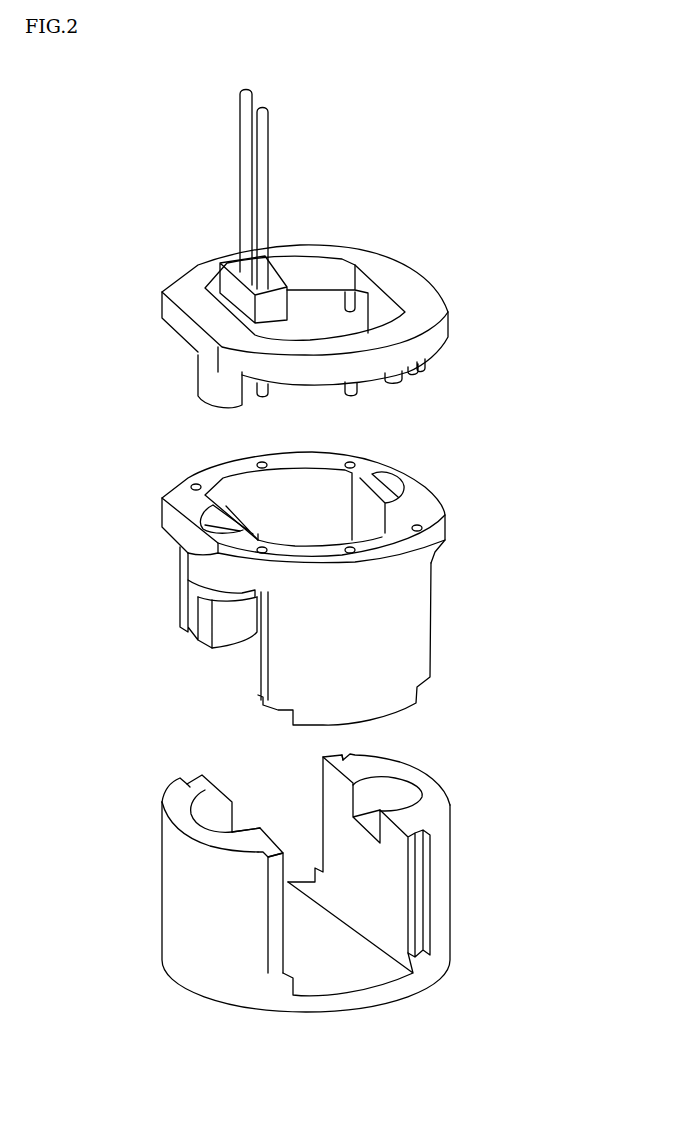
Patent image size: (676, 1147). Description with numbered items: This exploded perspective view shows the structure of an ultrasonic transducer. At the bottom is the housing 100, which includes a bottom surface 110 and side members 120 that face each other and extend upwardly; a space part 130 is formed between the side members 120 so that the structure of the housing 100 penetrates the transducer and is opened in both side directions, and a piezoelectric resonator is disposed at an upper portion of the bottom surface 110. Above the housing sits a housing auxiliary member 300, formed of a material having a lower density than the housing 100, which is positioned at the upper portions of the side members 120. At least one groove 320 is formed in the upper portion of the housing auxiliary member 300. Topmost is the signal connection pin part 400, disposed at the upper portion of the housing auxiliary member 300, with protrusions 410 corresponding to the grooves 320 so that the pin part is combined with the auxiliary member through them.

The housing 100 is at (465, 958).
The bottom surface 110 is at (353, 973).
The side members 120 is at (182, 900).
The space part 130 is at (258, 791).
The housing auxiliary member 300 is at (407, 607).
The groove 320 is at (203, 513).
The signal connection pin part 400 is at (387, 265).
The protrusions 410 is at (205, 380).